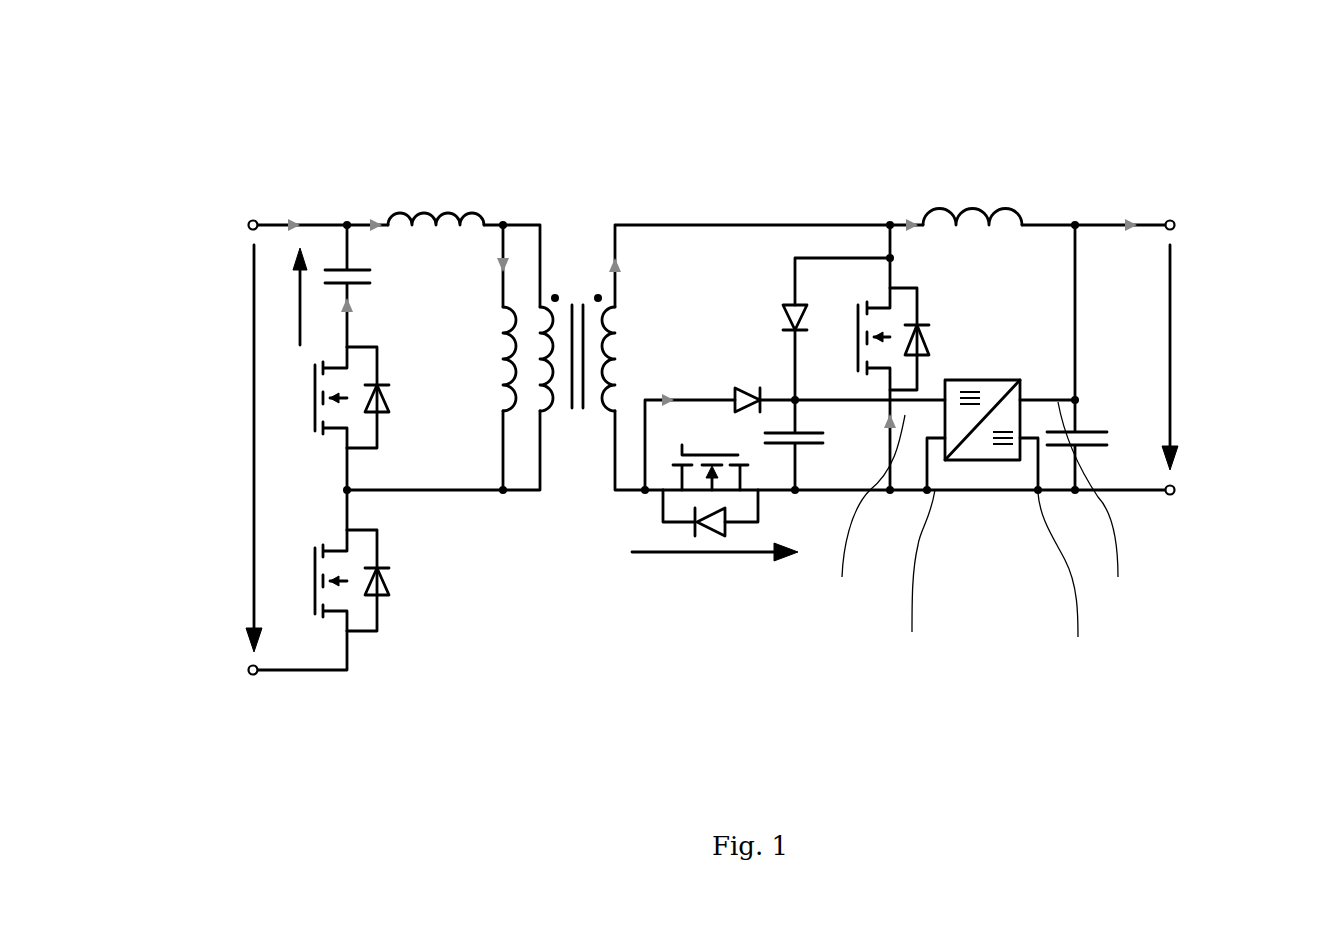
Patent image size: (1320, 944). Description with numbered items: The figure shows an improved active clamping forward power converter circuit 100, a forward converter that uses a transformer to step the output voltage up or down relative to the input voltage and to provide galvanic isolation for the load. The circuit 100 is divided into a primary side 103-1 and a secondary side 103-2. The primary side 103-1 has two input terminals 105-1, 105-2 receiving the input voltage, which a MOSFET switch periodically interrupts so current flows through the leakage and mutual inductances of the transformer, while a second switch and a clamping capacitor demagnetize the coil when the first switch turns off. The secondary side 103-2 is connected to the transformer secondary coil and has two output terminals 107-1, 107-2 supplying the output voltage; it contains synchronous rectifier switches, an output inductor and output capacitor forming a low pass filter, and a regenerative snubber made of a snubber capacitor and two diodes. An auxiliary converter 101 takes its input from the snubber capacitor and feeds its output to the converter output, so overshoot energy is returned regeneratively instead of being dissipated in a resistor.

The active clamping forward power converter circuit 100 is at (692, 401).
The auxiliary DC-DC converter 101 is at (990, 462).
The primary side 103-1 is at (392, 172).
The secondary side 103-2 is at (905, 403).
The input terminal 105-1 is at (253, 676).
The input terminal 105-2 is at (253, 217).
The output terminal 107-1 is at (1170, 497).
The output terminal 107-2 is at (1170, 216).